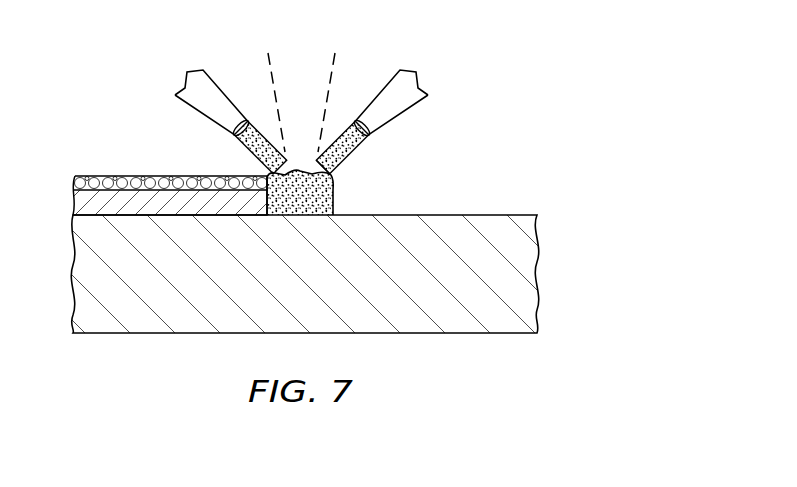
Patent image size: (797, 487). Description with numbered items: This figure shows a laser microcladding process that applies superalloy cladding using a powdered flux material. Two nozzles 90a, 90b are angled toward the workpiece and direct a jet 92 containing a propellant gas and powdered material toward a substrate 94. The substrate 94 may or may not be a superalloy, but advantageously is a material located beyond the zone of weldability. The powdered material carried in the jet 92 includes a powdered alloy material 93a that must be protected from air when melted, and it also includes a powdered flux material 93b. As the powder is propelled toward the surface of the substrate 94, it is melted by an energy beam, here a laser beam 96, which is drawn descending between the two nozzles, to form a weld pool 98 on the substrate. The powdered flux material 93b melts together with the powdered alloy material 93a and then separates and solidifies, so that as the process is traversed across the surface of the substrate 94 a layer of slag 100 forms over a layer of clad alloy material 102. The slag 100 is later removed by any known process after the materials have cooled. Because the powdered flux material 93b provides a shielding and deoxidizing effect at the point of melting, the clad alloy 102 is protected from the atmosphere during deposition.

The nozzle 90a is at (378, 112).
The nozzle 90b is at (224, 103).
The jet 92 is at (351, 148).
The powdered alloy material 93a is at (338, 166).
The powdered flux material 93b is at (250, 148).
The substrate 94 is at (443, 215).
The laser beam 96 is at (275, 88).
The weld pool 98 is at (335, 195).
The layer of slag 100 is at (85, 183).
The layer of clad alloy material 102 is at (80, 197).